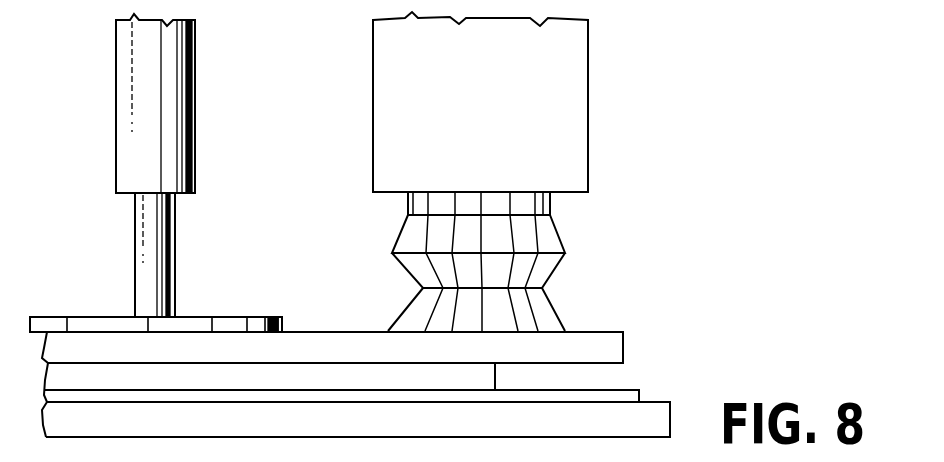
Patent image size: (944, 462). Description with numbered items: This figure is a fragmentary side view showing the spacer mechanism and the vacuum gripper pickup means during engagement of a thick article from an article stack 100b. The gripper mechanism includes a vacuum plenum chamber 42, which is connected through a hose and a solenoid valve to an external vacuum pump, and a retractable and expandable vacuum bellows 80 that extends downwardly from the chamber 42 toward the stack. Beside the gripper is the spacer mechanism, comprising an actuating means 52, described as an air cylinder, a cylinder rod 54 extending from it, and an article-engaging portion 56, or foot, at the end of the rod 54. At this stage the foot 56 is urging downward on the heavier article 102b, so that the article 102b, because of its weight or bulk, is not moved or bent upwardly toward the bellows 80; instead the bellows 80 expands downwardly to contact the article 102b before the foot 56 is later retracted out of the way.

The actuating means 52 is at (195, 100).
The cylinder rod 54 is at (175, 247).
The article-engaging portion 56 is at (265, 317).
The vacuum plenum chamber 42 is at (496, 101).
The vacuum bellows 80 is at (563, 243).
The heavier article 102b is at (603, 327).
The article stack 100b is at (648, 372).